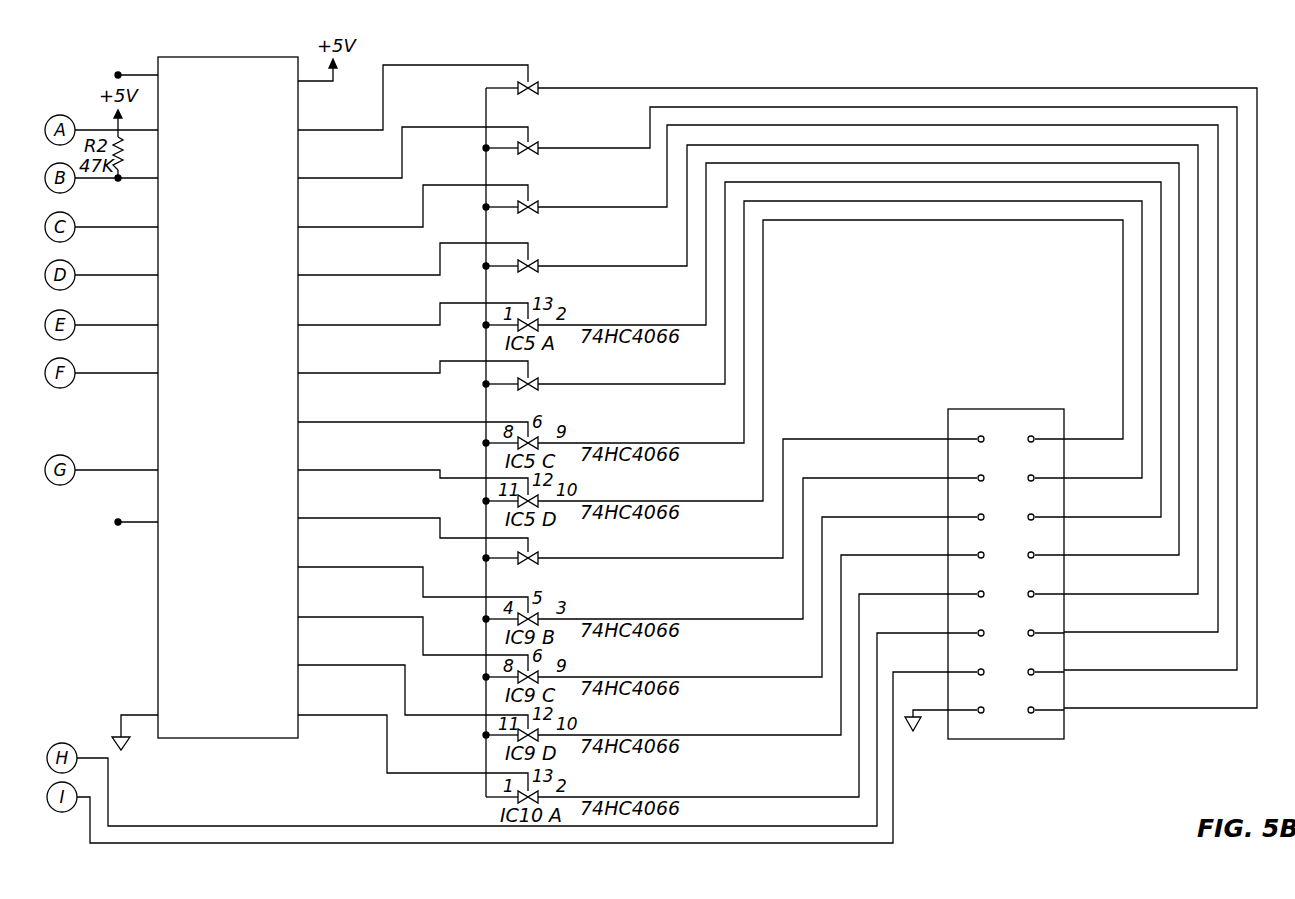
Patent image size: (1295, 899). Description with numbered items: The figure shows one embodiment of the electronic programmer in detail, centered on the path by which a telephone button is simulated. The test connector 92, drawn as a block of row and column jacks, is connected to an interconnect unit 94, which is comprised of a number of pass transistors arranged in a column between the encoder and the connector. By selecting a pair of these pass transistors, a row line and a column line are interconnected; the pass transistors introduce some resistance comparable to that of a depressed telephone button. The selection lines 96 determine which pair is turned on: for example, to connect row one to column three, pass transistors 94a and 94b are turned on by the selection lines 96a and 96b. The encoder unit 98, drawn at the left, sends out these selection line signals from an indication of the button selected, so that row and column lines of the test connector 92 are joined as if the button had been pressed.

The test connector 92 is at (1033, 757).
The interconnect unit 94 is at (568, 58).
The pass transistor 94a is at (553, 543).
The pass transistor 94b is at (553, 370).
The selection lines 96 is at (363, 753).
The selection line 96a is at (476, 556).
The selection line 96b is at (476, 378).
The encoder unit 98 is at (190, 57).